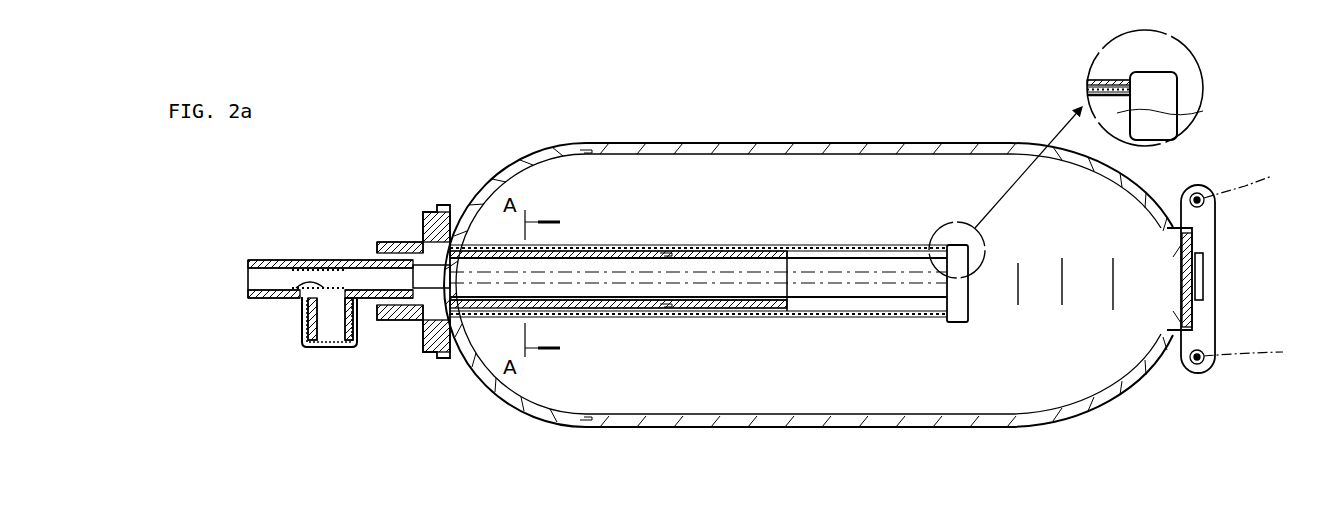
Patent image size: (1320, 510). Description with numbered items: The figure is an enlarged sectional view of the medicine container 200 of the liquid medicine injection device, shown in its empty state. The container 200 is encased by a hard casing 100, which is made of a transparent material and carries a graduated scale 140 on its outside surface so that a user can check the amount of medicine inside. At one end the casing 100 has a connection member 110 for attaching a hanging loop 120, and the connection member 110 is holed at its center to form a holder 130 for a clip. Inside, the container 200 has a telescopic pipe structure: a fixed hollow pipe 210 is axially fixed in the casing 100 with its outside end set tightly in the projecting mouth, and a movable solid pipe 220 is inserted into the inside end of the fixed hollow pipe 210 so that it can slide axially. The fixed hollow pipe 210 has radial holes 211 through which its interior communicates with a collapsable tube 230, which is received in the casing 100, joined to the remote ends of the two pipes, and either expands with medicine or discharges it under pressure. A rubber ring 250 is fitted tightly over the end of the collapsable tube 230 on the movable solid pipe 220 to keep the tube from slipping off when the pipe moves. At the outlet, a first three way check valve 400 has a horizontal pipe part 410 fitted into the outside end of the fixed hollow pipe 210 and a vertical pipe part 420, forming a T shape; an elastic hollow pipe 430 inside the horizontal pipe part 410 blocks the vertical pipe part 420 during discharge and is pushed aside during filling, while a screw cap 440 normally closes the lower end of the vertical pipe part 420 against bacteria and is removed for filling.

The hard casing 100 is at (695, 143).
The connection member 110 is at (1215, 237).
The hanging loop 120 is at (1238, 182).
The holder 130 is at (1205, 277).
The graduated scale 140 is at (1110, 287).
The medicine container 200 is at (757, 246).
The fixed hollow pipe 210 is at (597, 249).
The radial holes 211 is at (683, 249).
The movable solid pipe 220 is at (1188, 111).
The collapsable tube 230 is at (617, 319).
The rubber ring 250 is at (1097, 82).
The first three way check valve 400 is at (325, 240).
The horizontal pipe part 410 is at (263, 259).
The vertical pipe part 420 is at (307, 333).
The elastic hollow pipe 430 is at (287, 300).
The screw cap 440 is at (333, 348).